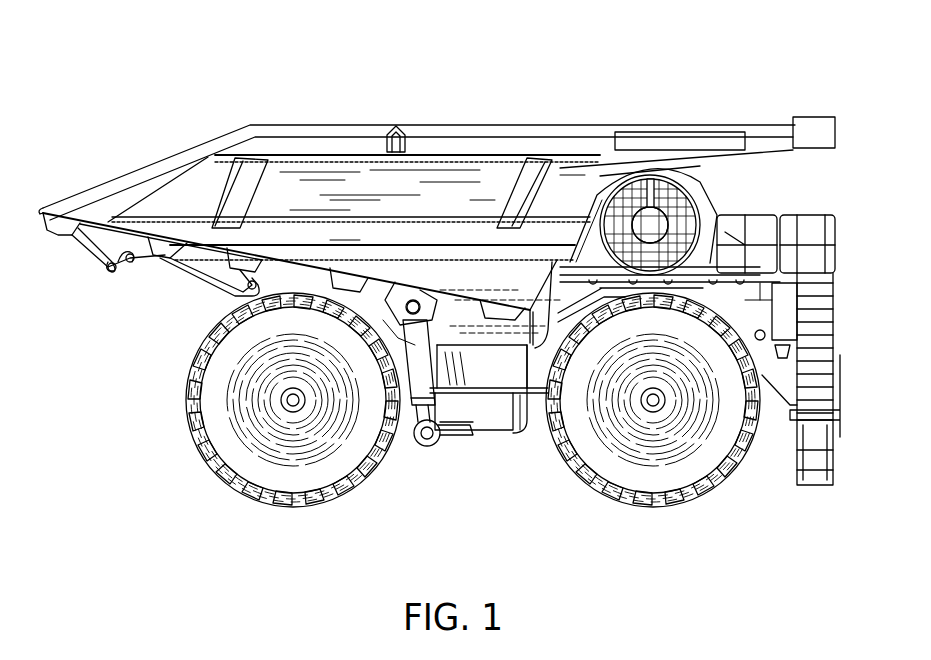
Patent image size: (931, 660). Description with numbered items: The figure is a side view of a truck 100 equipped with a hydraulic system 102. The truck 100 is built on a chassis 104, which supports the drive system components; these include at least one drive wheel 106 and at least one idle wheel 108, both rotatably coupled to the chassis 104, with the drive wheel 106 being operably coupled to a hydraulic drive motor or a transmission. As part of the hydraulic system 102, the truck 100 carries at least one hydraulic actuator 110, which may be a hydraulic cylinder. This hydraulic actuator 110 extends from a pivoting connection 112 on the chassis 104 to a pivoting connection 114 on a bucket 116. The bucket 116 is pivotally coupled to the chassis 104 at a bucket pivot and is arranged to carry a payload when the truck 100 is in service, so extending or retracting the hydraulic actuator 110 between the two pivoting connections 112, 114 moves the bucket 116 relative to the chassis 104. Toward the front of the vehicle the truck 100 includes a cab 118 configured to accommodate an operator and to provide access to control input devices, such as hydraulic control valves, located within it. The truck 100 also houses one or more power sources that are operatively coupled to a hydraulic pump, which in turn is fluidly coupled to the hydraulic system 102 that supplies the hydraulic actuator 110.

The truck 100 is at (745, 65).
The hydraulic system 102 is at (442, 447).
The chassis 104 is at (537, 375).
The drive wheel 106 is at (217, 390).
The idle wheel 108 is at (655, 477).
The hydraulic actuator 110 is at (418, 367).
The pivoting connection 112 is at (421, 447).
The pivoting connection 114 is at (411, 300).
The bucket 116 is at (308, 148).
The cab 118 is at (708, 192).